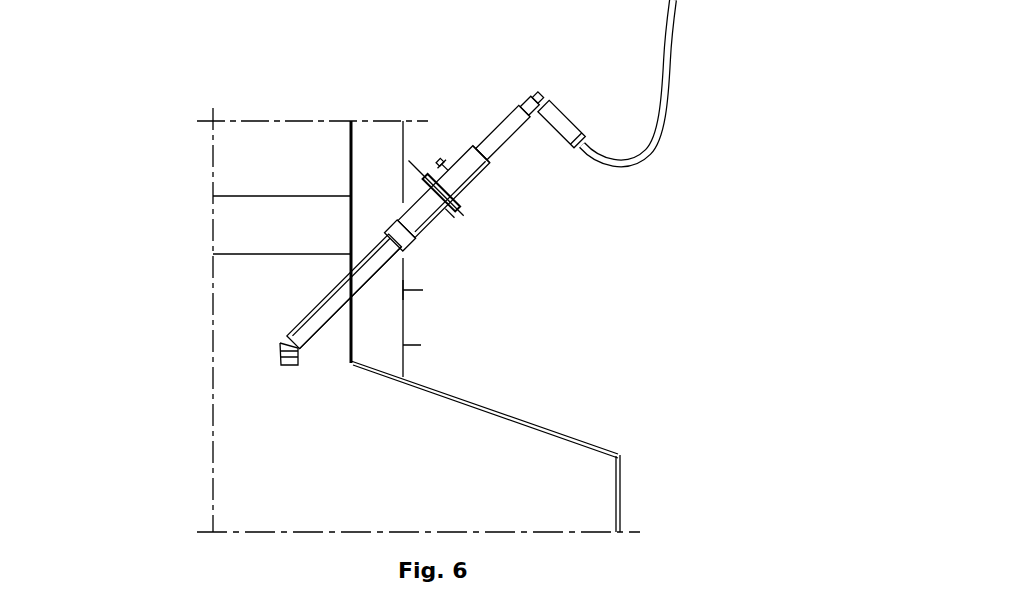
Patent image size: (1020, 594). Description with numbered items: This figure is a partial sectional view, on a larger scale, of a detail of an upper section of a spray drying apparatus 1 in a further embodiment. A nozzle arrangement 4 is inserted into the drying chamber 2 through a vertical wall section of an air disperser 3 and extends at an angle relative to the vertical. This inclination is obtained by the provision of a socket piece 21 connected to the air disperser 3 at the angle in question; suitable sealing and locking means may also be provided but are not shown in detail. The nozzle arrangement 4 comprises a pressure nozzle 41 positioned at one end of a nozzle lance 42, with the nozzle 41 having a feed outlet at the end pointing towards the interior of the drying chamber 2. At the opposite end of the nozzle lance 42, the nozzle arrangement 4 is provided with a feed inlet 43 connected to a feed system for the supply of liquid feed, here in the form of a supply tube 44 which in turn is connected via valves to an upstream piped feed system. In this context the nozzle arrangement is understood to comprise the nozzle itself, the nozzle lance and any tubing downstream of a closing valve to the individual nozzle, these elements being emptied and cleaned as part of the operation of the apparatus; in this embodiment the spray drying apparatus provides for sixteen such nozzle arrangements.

The spray drying apparatus 1 is at (146, 162).
The drying chamber 2 is at (527, 424).
The air disperser 3 is at (352, 317).
The nozzle arrangement 4 is at (621, 214).
The socket piece 21 is at (403, 247).
The pressure nozzle 41 is at (282, 362).
The nozzle lance 42 is at (303, 335).
The feed inlet 43 is at (478, 160).
The supply tube 44 is at (666, 30).